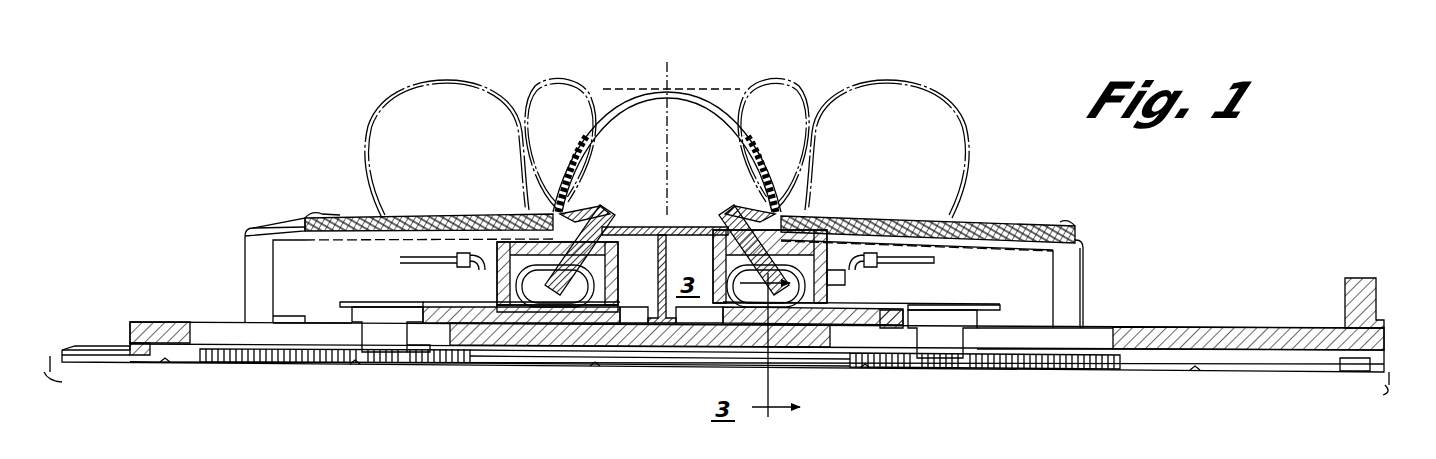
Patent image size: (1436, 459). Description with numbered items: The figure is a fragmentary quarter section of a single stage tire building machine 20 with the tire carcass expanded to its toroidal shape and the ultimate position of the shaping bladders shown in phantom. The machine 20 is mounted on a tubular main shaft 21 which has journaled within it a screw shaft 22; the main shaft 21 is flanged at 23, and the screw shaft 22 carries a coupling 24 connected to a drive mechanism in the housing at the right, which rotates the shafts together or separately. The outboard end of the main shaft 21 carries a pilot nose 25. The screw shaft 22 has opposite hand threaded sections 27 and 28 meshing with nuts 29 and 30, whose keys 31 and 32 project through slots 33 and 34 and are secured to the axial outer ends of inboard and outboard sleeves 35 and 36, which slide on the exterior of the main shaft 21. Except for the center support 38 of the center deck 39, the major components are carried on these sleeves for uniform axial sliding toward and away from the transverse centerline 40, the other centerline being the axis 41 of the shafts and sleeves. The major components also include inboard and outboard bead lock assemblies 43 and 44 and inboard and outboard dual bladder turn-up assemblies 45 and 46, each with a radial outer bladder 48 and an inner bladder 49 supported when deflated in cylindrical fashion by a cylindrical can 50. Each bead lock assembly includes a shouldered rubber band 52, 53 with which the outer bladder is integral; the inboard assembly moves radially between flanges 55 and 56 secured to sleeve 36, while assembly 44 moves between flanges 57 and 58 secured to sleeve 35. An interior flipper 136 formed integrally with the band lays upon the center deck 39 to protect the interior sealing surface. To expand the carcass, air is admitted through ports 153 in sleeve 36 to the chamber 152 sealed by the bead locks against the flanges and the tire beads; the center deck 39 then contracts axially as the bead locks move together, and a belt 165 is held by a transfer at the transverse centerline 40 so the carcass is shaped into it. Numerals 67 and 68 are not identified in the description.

The tire building machine 20 is at (1022, 200).
The main shaft 21 is at (1178, 327).
The screw shaft 22 is at (1253, 370).
The flange 23 is at (1376, 286).
The coupling 24 is at (1370, 372).
The pilot nose 25 is at (105, 346).
The threaded section 27 is at (317, 362).
The threaded section 28 is at (1058, 368).
The nut 29 is at (418, 352).
The nut 30 is at (897, 358).
The key 31 is at (385, 338).
The key 32 is at (940, 343).
The slot 33 is at (327, 335).
The slot 34 is at (1017, 337).
The inboard sleeve 35 is at (450, 310).
The outboard sleeve 36 is at (943, 310).
The center support 38 is at (672, 322).
The center deck 39 is at (670, 216).
The transverse centerline 40 is at (672, 90).
The axis 41 is at (725, 382).
The inboard bead lock assembly 43 is at (752, 196).
The outboard bead lock assembly 44 is at (582, 196).
The inboard dual bladder turn-up assembly 45 is at (962, 222).
The outboard dual bladder turn-up assembly 46 is at (375, 214).
The outer bladder 48 is at (320, 214).
The inner bladder 49 is at (258, 228).
The cylindrical can 50 is at (280, 267).
The shouldered rubber band 52 is at (760, 215).
The shouldered rubber band 53 is at (596, 210).
The flange 55 is at (713, 270).
The flange 56 is at (845, 278).
The flange 57 is at (618, 275).
The flange 58 is at (500, 275).
The left tube fitting 67 is at (380, 308).
The left cover strip 68 is at (340, 308).
The interior flipper 136 is at (608, 226).
The chamber 152 is at (635, 320).
The ports 153 is at (728, 364).
The belt 165 is at (606, 89).